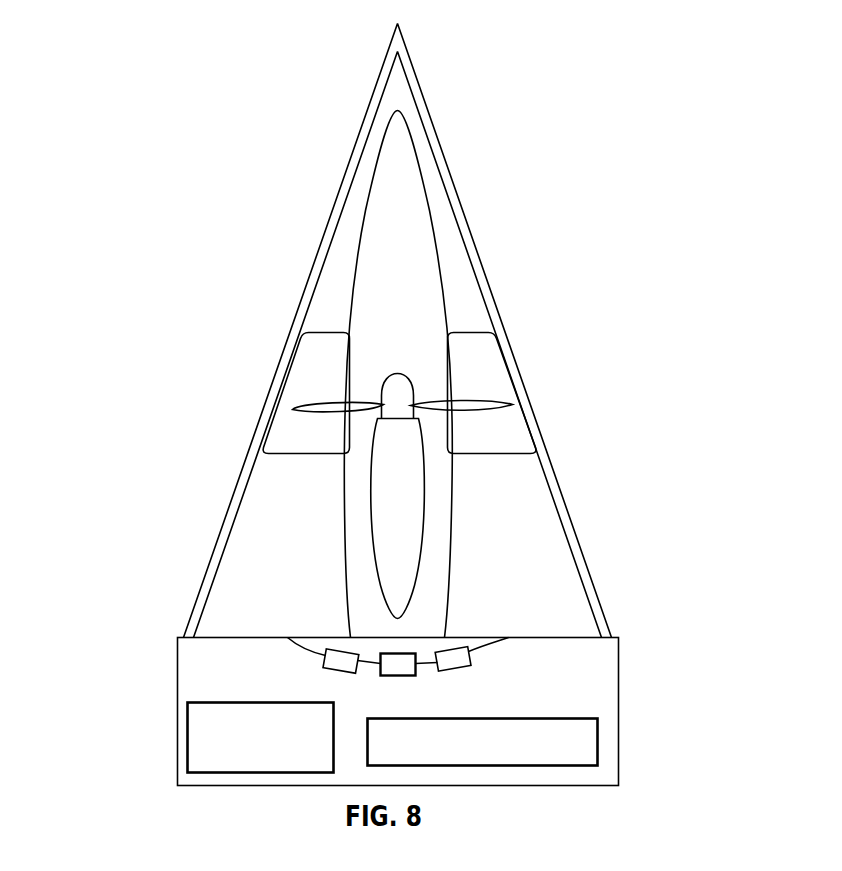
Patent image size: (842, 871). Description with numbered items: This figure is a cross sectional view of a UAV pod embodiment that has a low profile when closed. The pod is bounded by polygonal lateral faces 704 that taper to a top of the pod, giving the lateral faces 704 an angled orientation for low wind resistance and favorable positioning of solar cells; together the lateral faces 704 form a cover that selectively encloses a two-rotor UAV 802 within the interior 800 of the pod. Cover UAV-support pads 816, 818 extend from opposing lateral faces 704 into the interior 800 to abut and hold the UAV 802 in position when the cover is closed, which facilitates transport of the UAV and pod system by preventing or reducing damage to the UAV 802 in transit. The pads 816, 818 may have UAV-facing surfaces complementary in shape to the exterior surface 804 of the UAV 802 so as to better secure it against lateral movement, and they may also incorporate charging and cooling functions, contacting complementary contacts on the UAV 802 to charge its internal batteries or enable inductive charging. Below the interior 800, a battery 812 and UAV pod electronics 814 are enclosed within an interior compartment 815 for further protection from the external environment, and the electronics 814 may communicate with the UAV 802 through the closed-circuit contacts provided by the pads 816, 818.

The polygonal lateral faces 704 is at (418, 78).
The interior 800 is at (463, 302).
The UAV 802 is at (395, 213).
The exterior surface 804 is at (356, 486).
The cover UAV-support pad 816 is at (323, 371).
The cover UAV-support pad 818 is at (477, 373).
The interior compartment 815 is at (587, 680).
The battery 812 is at (190, 742).
The UAV pod electronics 814 is at (597, 742).